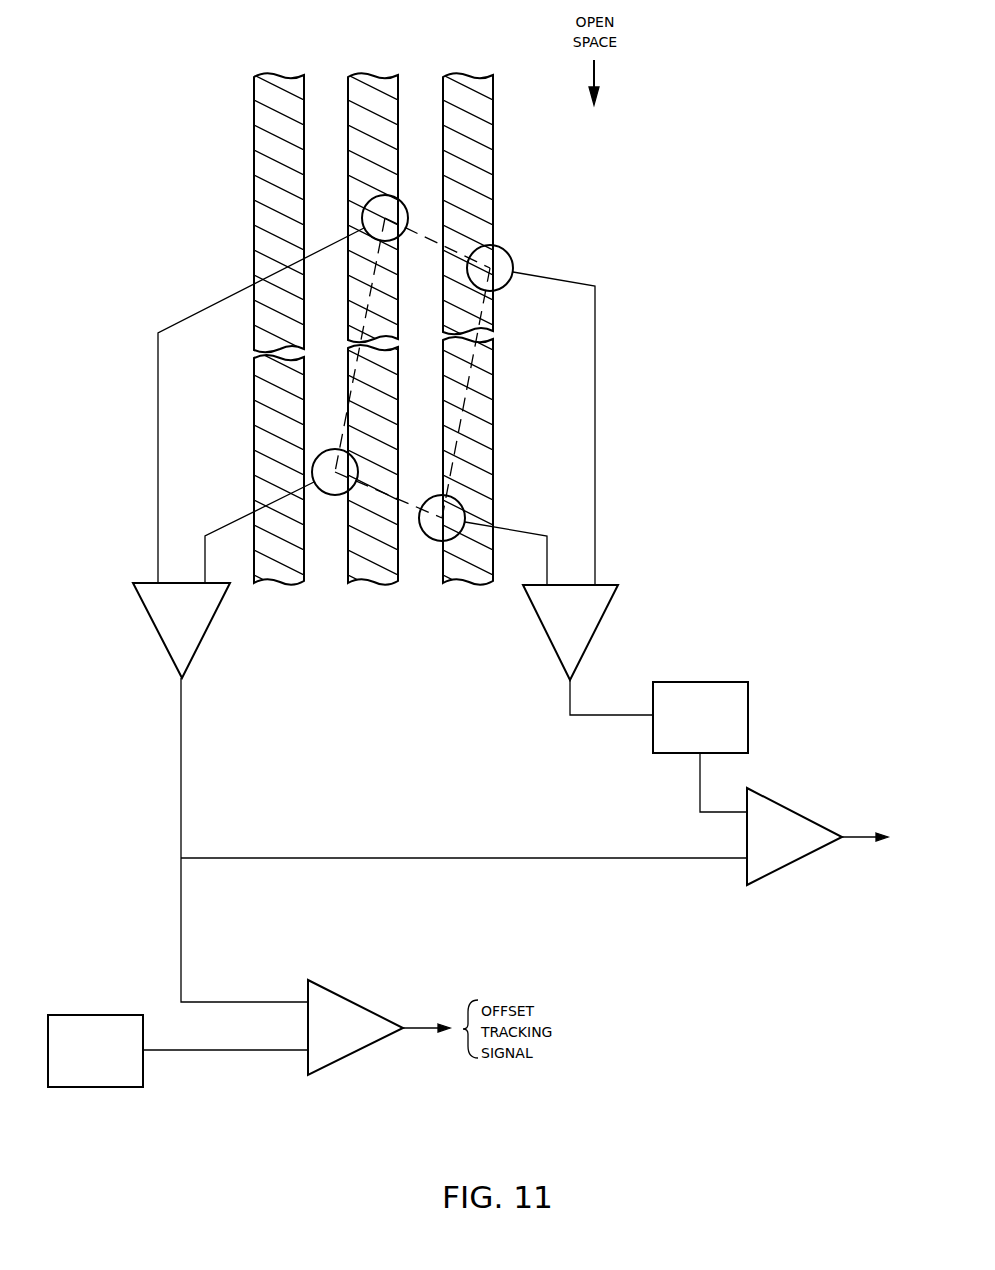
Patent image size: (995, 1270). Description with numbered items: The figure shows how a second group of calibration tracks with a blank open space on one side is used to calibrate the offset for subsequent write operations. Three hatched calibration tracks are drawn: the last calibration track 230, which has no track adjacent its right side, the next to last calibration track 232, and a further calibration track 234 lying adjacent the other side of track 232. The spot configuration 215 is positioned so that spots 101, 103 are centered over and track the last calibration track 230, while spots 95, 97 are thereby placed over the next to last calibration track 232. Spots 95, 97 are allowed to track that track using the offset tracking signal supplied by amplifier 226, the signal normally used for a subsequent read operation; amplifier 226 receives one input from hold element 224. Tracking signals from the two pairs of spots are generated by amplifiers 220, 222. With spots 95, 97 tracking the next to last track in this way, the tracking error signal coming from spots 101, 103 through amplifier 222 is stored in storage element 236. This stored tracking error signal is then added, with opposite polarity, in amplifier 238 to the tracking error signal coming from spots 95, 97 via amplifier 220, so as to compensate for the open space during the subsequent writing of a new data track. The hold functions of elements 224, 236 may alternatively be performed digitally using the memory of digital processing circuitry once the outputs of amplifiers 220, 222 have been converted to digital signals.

The calibration track 234 is at (272, 74).
The next to last calibration track 232 is at (367, 74).
The last calibration track 230 is at (462, 74).
The spot 95 is at (401, 203).
The spot 103 is at (507, 248).
The spot 97 is at (323, 449).
The spot 101 is at (427, 497).
The spot configuration 215 is at (431, 243).
The amplifier 220 is at (205, 635).
The amplifier 222 is at (543, 638).
The storage element 236 is at (748, 712).
The amplifier 238 is at (790, 807).
The hold element 224 is at (97, 1015).
The amplifier 226 is at (352, 998).